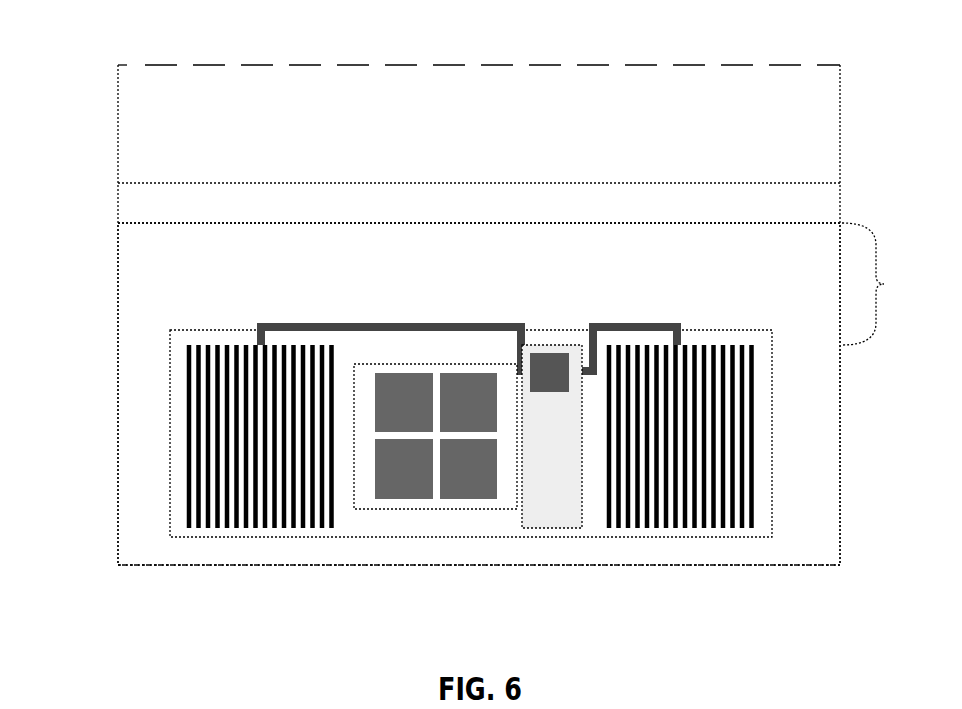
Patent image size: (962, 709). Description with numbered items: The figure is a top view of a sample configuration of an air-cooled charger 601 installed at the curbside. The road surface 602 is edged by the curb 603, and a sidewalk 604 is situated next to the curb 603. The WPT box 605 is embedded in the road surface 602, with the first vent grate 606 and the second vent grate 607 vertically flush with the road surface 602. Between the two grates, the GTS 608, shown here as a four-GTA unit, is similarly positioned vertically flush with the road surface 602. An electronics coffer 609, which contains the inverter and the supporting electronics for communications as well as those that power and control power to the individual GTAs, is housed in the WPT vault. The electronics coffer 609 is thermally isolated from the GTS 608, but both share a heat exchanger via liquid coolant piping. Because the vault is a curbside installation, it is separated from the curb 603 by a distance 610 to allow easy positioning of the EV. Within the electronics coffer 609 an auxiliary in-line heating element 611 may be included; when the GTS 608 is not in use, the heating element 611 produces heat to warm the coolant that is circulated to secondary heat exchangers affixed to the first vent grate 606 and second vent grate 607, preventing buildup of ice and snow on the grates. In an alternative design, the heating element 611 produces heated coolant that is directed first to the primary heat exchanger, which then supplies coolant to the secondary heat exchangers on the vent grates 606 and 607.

The air-cooled charger 601 is at (479, 294).
The road surface 602 is at (479, 394).
The curb 603 is at (479, 208).
The sidewalk 604 is at (479, 150).
The WPT box 605 is at (215, 328).
The first vent grate 606 is at (253, 438).
The second vent grate 607 is at (683, 437).
The GTS 608 is at (435, 366).
The electronics coffer 609 is at (545, 484).
The distance 610 is at (884, 284).
The auxiliary in-line heating element 611 is at (556, 346).